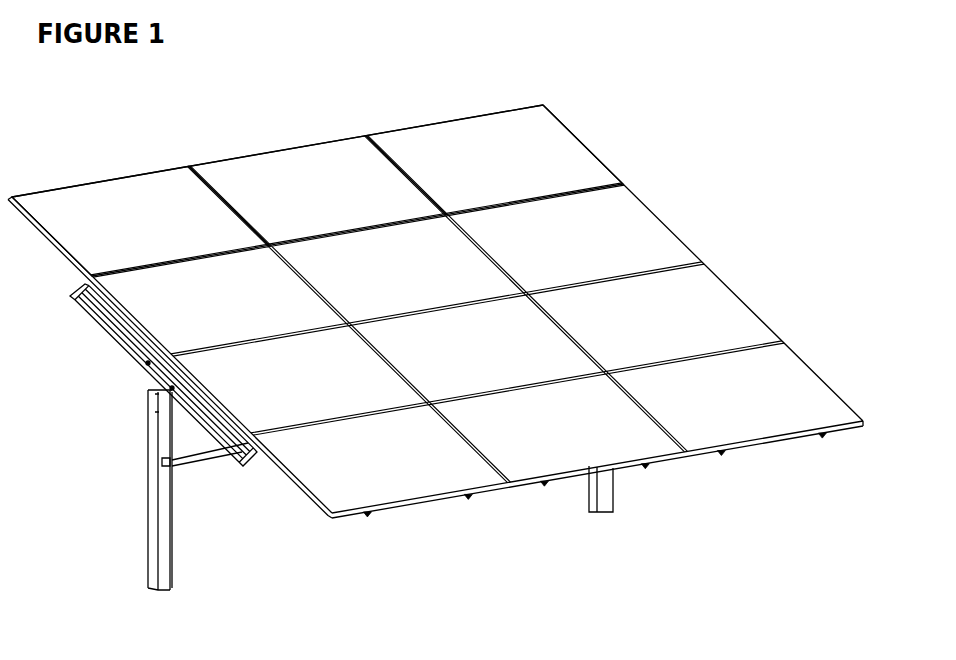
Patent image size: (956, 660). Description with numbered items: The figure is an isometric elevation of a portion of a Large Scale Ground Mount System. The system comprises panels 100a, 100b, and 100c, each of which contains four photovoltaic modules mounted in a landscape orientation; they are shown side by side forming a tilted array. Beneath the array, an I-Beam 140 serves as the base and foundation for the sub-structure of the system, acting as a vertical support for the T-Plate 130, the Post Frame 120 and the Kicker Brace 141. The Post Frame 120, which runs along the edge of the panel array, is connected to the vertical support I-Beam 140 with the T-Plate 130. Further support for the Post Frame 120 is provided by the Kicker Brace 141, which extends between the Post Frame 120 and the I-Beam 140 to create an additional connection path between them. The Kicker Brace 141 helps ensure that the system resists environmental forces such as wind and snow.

The panel 100a is at (93, 182).
The panel 100b is at (280, 144).
The panel 100c is at (453, 111).
The Post Frame 120 is at (133, 350).
The T-Plate 130 is at (153, 383).
The I-Beam 140 is at (148, 518).
The Kicker Brace 141 is at (193, 458).